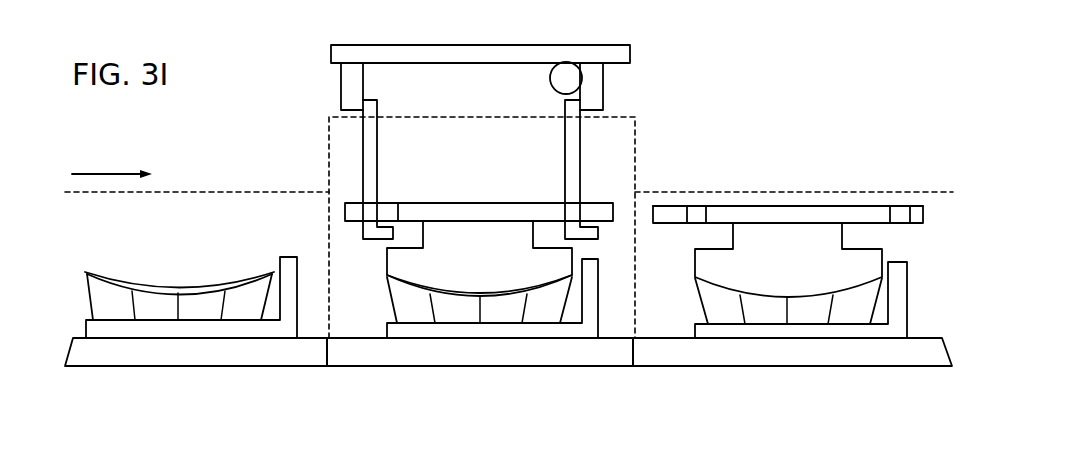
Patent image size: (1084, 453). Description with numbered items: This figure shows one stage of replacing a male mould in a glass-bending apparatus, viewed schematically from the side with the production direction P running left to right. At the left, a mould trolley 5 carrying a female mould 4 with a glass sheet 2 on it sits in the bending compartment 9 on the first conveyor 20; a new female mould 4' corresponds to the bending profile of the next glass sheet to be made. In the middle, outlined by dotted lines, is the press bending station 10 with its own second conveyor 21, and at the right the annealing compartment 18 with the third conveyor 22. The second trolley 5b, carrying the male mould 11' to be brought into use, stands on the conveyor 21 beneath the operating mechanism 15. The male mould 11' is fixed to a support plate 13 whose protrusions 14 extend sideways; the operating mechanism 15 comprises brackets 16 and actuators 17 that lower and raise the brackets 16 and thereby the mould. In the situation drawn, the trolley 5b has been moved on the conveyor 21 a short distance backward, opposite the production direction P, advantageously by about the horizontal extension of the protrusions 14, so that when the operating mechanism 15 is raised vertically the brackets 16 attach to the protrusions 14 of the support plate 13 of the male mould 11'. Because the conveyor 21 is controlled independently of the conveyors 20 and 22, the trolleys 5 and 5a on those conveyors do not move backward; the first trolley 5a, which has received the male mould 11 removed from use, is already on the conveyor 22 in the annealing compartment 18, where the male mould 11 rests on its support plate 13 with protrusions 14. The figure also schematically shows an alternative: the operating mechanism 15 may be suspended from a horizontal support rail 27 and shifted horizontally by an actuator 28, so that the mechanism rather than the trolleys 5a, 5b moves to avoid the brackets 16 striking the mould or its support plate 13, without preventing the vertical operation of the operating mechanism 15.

The production direction P is at (93, 174).
The glass sheet 2 is at (175, 285).
The female mould 4 is at (771, 302).
The new female mould 4' is at (340, 345).
The mould trolley 5 is at (203, 328).
The first trolley 5a is at (743, 347).
The second trolley 5b is at (423, 348).
The bending compartment 9 is at (253, 182).
The press bending station 10 is at (343, 190).
The male mould 11 is at (788, 260).
The male mould to be used next 11' is at (479, 258).
The support plate 13 is at (492, 217).
The protrusions 14 is at (385, 215).
The operating mechanism 15 is at (322, 77).
The brackets 16 is at (366, 106).
The actuators 17 is at (343, 97).
The annealing compartment 18 is at (825, 135).
The first conveyor 20 is at (277, 350).
The second conveyor 21 is at (508, 348).
The third conveyor 22 is at (882, 357).
The support rail 27 is at (357, 55).
The actuator 28 is at (558, 82).